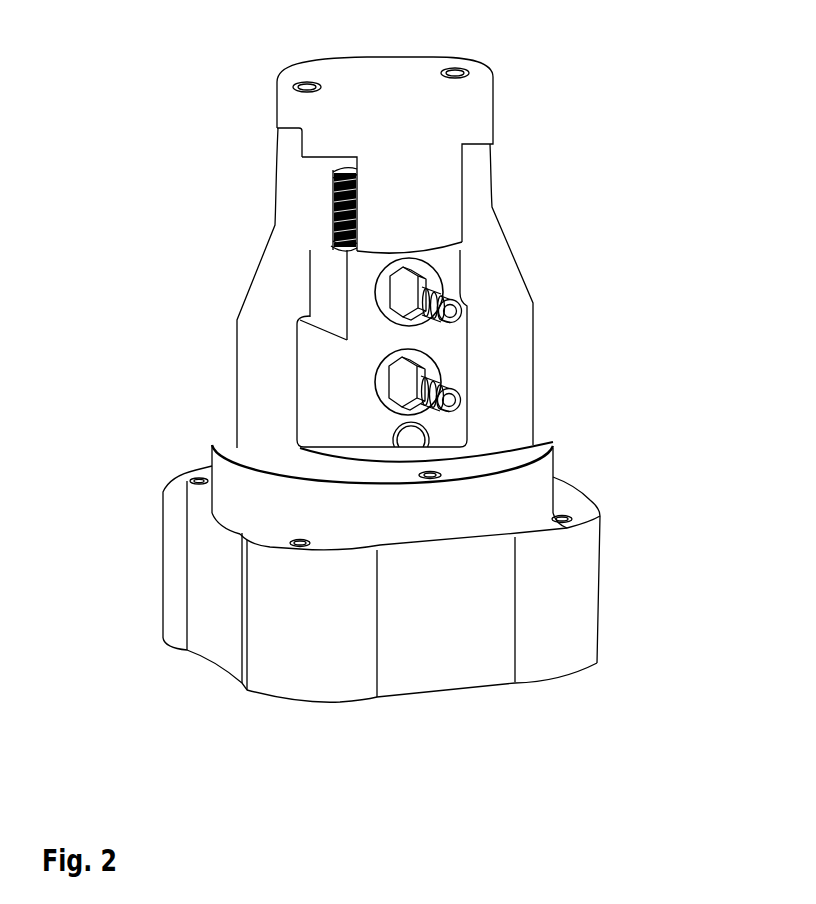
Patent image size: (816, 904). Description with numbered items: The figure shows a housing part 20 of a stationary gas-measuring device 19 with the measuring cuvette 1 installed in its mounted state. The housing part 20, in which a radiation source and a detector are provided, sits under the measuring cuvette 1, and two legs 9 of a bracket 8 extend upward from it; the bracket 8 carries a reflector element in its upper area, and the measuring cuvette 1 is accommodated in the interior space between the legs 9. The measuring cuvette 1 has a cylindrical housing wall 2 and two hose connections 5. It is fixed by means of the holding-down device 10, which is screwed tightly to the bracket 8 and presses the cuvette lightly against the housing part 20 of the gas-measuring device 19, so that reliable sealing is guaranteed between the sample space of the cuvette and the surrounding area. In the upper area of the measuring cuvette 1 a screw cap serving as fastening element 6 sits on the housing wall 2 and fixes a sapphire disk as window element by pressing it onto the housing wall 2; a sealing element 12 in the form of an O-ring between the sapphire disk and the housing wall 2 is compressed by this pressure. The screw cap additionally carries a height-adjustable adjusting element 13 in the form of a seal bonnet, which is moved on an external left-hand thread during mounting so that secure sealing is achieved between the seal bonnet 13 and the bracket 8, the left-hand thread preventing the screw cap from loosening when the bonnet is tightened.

The measuring cuvette 1 is at (468, 241).
The housing wall 2 is at (448, 358).
The hose connections 5 is at (450, 402).
The fastening element 6 is at (331, 209).
The bracket 8 is at (293, 131).
The legs 9 is at (490, 250).
The holding-down device 10 is at (430, 122).
The sealing element 12 is at (333, 248).
The adjusting element 13 is at (333, 190).
The gas-measuring device 19 is at (567, 568).
The housing part 20 is at (203, 85).